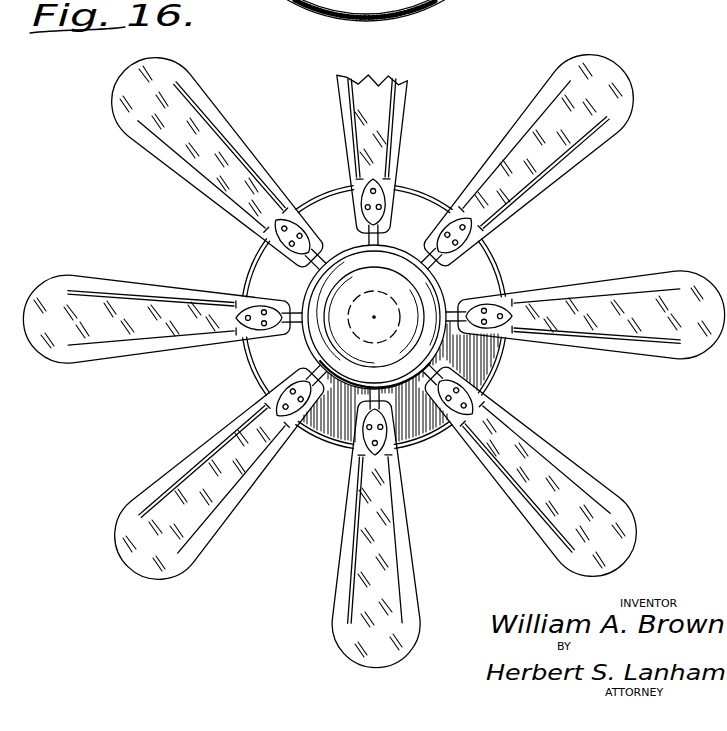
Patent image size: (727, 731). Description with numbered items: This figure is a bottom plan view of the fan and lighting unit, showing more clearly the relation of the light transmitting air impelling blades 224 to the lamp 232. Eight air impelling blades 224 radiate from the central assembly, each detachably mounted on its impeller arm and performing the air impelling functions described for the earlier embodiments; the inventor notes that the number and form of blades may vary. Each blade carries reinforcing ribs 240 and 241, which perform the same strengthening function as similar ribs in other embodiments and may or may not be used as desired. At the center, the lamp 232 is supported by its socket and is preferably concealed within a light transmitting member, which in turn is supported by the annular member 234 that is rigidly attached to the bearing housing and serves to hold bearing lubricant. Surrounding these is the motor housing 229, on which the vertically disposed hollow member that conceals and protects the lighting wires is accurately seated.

The air impelling blades 224 is at (623, 127).
The reinforcing rib 241 is at (523, 146).
The reinforcing rib 240 is at (540, 172).
The motor housing 229 is at (500, 243).
The annular member 234 is at (415, 273).
The lamp 232 is at (417, 293).